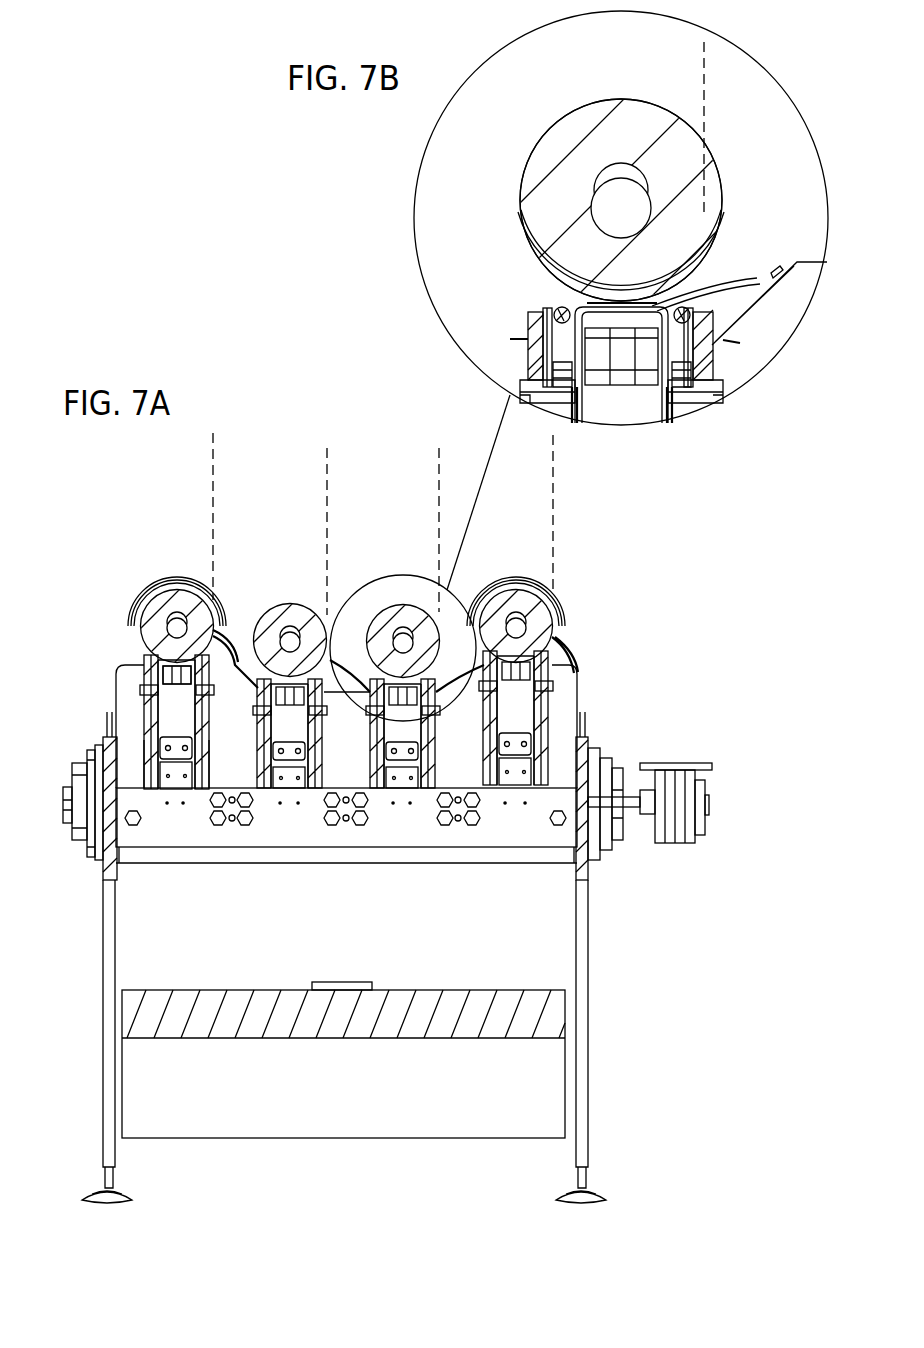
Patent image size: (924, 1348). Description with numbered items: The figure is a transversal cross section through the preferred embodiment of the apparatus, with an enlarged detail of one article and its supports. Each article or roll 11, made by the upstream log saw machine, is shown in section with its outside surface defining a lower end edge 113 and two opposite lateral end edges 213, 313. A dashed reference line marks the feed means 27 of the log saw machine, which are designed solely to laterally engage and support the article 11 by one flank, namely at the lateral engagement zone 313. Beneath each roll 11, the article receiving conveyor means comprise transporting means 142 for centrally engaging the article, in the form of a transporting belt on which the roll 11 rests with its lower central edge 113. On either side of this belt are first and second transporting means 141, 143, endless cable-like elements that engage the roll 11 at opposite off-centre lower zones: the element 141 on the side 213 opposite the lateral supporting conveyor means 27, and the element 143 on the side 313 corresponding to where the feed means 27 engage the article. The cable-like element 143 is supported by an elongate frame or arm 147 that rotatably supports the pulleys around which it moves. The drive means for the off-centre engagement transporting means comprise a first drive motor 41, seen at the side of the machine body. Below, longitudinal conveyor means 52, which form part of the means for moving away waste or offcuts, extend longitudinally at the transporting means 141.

In FIG. 7A, the articles or rolls 11 is at (386, 604).
In FIG. 7B, the articles or rolls 11 is at (556, 102).
In FIG. 7A, the feed means 27 is at (208, 546).
In FIG. 7B, the feed means 27 is at (710, 78).
In FIG. 7A, the first drive motor 41 is at (628, 746).
In FIG. 7A, the longitudinal conveyor means 52 is at (540, 998).
In FIG. 7B, the lower end edge 113 is at (621, 292).
In FIG. 7A, the transporting means 141 is at (145, 648).
In FIG. 7B, the transporting means 141 is at (545, 300).
In FIG. 7A, the transporting means for centrally engaging the articles 142 is at (147, 678).
In FIG. 7B, the transporting means for centrally engaging the articles 142 is at (612, 290).
In FIG. 7A, the transporting means 143 is at (214, 632).
In FIG. 7B, the transporting means 143 is at (720, 336).
In FIG. 7A, the frame 147 is at (212, 738).
In FIG. 7B, the lateral end edge 213 is at (510, 192).
In FIG. 7B, the lateral end edge 313 is at (742, 190).